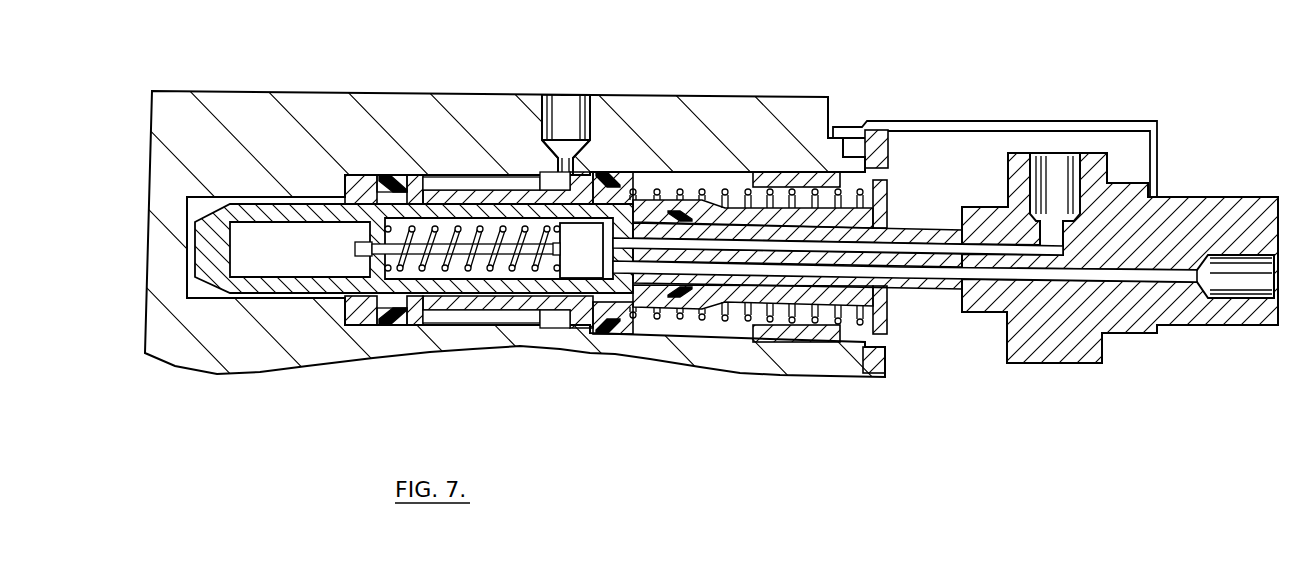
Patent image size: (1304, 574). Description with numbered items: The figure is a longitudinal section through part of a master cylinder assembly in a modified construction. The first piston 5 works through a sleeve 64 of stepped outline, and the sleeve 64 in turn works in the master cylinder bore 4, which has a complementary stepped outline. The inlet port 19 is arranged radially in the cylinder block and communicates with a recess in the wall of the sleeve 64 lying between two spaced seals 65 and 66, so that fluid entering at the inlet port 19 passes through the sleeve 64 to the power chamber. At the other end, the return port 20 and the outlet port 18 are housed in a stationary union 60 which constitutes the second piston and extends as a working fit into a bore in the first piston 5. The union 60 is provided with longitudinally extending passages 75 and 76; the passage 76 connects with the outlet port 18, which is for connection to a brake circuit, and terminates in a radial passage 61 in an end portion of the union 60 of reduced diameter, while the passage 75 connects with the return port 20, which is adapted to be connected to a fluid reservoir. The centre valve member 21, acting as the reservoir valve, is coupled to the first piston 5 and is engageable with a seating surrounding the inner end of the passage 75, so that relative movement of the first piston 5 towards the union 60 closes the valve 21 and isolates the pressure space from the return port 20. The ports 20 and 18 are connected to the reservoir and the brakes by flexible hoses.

The master cylinder bore 4 is at (437, 177).
The first piston 5 is at (288, 218).
The outlet port 18 is at (1245, 282).
The inlet port 19 is at (560, 161).
The return port 20 is at (1053, 178).
The centre valve member 21 is at (577, 267).
The stationary union 60 is at (1202, 228).
The radial passage 61 is at (636, 280).
The sleeve 64 is at (470, 190).
The seal 65 is at (386, 182).
The seal 66 is at (603, 172).
The longitudinal passage 75 is at (918, 243).
The longitudinal passage 76 is at (935, 270).